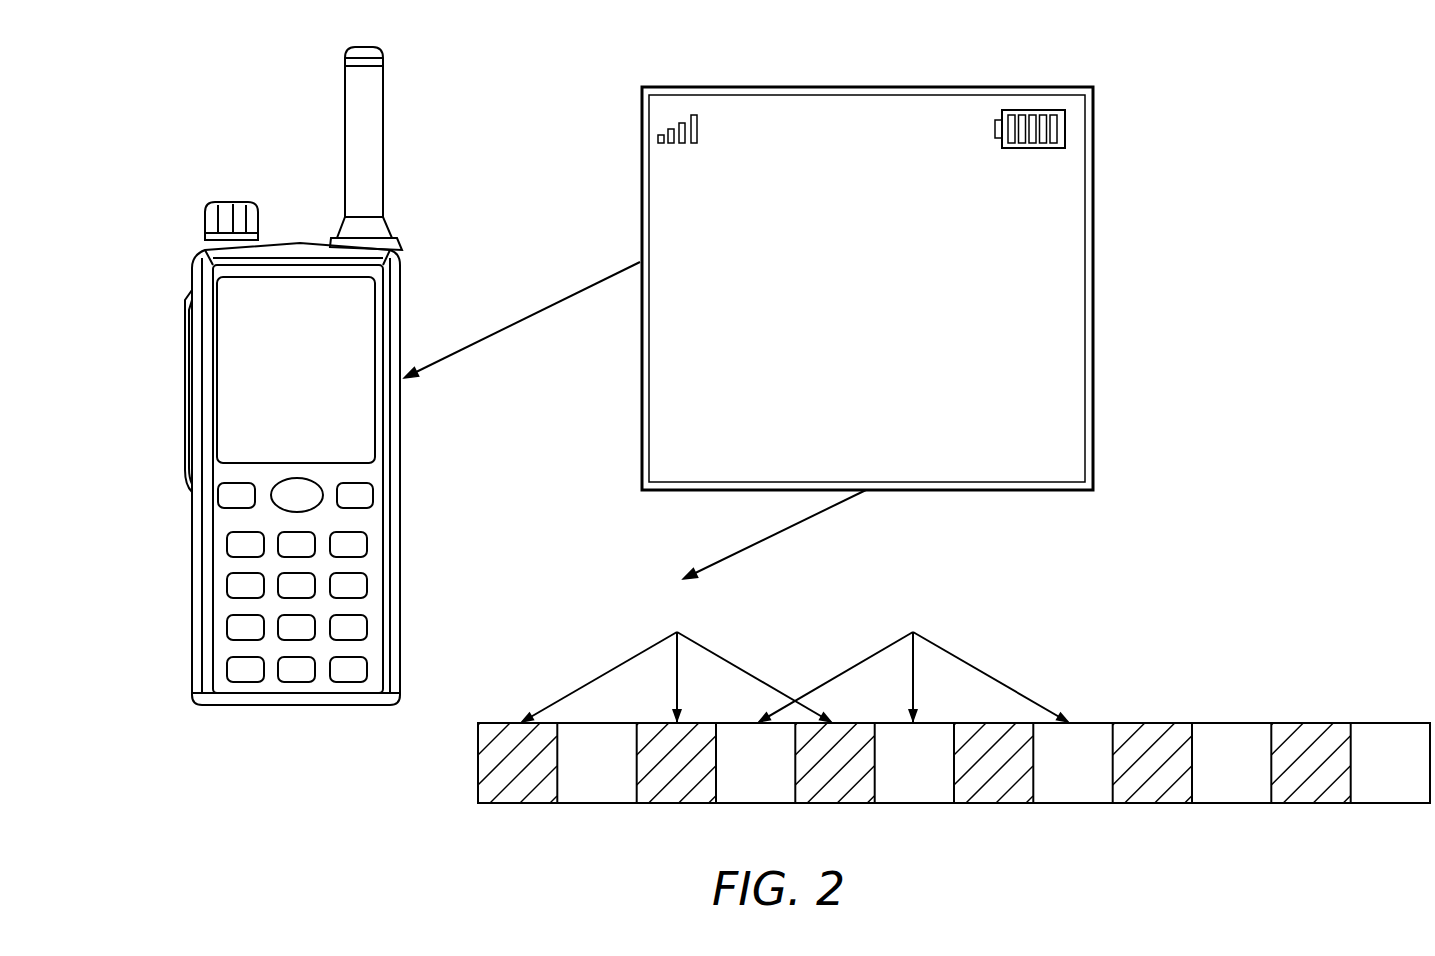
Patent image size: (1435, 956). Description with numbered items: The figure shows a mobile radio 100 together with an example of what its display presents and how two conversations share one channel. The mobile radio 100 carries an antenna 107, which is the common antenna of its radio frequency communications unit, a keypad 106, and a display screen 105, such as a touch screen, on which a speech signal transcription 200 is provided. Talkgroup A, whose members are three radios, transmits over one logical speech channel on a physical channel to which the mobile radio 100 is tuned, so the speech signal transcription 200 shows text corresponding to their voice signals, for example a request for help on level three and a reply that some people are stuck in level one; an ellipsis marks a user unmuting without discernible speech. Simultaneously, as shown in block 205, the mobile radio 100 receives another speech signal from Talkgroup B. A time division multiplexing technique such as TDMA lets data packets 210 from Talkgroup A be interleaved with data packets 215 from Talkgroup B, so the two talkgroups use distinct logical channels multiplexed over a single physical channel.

The mobile radio 100 is at (170, 212).
The display screen 105 is at (343, 393).
The keypad 106 is at (407, 473).
The antenna 107 is at (383, 141).
The speech signal transcription 200 is at (1081, 87).
The block illustrating time division multiplexing 205 is at (1268, 640).
The data packets from Talkgroup A 210 is at (914, 718).
The data packets from Talkgroup B 215 is at (993, 718).